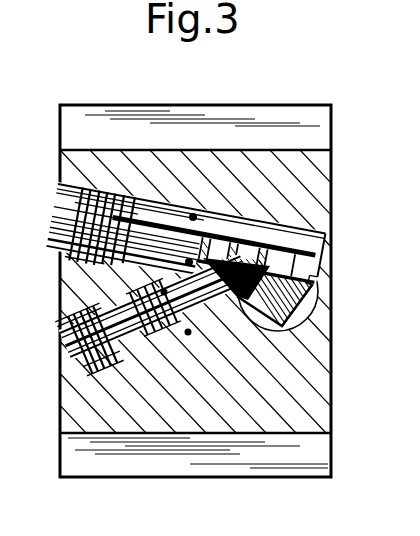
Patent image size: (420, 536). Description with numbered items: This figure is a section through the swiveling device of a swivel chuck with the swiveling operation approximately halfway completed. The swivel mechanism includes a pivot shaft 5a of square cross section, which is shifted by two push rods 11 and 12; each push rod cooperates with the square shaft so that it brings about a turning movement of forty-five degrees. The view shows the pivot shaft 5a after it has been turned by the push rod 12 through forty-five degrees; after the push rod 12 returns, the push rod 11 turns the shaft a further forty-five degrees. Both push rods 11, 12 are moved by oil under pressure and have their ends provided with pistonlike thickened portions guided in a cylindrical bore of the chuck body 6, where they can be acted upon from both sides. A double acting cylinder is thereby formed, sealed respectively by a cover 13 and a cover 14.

The chuck body 6 is at (322, 186).
The pivot shaft 5a is at (318, 307).
The push rod 11 is at (152, 222).
The push rod 12 is at (193, 300).
The cover 13 is at (86, 221).
The cover 14 is at (78, 368).